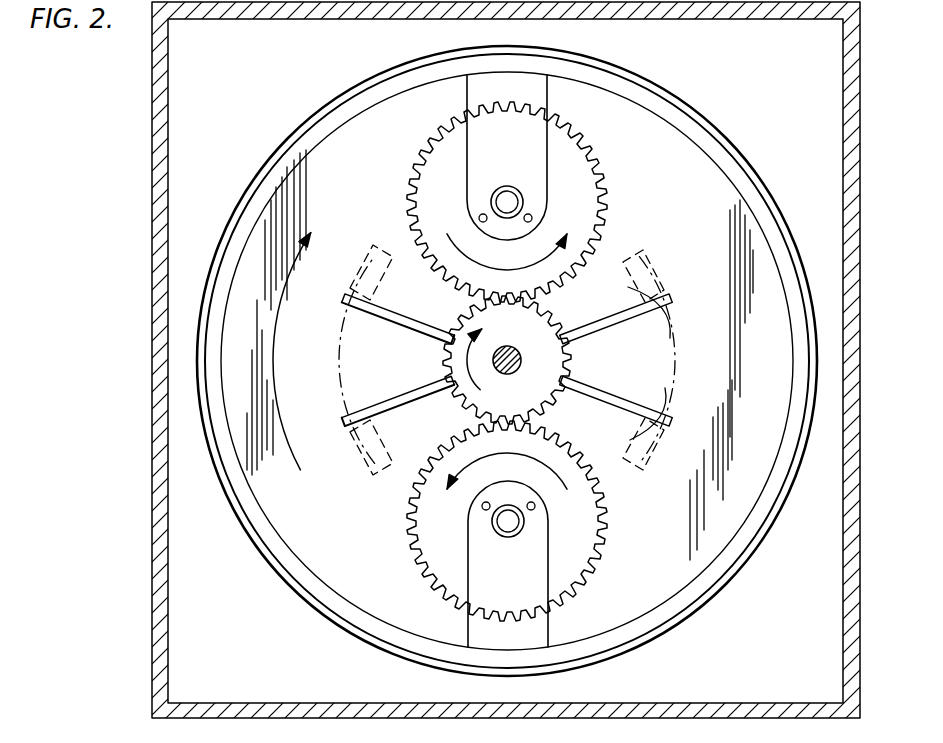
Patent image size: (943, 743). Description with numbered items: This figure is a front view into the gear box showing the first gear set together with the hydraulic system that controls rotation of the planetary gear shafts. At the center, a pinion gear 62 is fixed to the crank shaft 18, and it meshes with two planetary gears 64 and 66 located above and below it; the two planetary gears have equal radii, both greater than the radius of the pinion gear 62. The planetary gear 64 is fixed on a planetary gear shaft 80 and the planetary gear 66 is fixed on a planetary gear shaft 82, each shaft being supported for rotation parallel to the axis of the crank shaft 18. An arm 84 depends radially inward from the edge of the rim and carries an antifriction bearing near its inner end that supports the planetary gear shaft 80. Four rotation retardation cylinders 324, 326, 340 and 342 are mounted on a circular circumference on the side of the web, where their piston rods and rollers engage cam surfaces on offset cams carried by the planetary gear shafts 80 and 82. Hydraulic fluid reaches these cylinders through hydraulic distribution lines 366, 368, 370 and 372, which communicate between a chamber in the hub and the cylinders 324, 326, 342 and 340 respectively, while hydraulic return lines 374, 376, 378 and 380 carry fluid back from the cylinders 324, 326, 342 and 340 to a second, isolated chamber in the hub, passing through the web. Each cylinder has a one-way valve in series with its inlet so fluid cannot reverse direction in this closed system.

The crank shaft 18 is at (511, 373).
The pinion gear 62 is at (572, 359).
The planetary gear 64 is at (592, 545).
The planetary gear 66 is at (592, 206).
The planetary gear shaft 80 is at (494, 528).
The planetary gear shaft 82 is at (521, 197).
The arm 84 is at (535, 577).
The rotation retardation cylinder 324 is at (665, 283).
The rotation retardation cylinder 326 is at (655, 460).
The rotation retardation cylinder 340 is at (365, 250).
The rotation retardation cylinder 342 is at (367, 473).
The hydraulic distribution line 366 is at (640, 275).
The hydraulic distribution line 368 is at (665, 388).
The hydraulic distribution line 370 is at (401, 396).
The hydraulic distribution line 372 is at (402, 322).
The hydraulic return line 374 is at (670, 338).
The hydraulic return line 376 is at (620, 408).
The hydraulic return line 378 is at (388, 411).
The hydraulic return line 380 is at (409, 331).